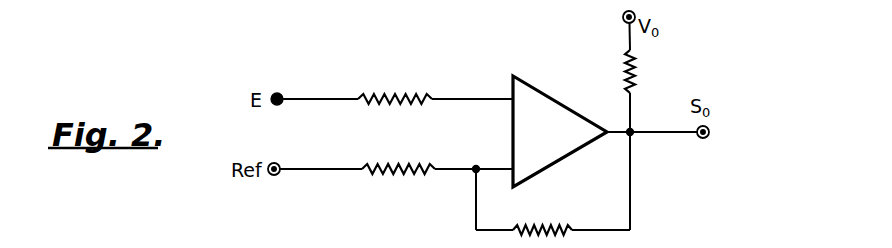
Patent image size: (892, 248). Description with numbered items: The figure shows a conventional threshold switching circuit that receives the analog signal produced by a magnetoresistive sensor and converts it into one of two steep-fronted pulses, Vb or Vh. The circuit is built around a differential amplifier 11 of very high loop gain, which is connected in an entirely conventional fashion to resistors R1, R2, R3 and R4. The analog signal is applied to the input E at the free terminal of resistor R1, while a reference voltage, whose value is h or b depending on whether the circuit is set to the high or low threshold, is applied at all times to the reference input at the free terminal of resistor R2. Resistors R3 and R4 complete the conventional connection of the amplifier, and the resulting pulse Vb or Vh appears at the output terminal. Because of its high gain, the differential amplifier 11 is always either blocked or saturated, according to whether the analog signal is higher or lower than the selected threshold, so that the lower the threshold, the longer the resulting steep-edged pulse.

The differential amplifier 11 is at (548, 146).
The resistor R1 is at (395, 85).
The resistor R2 is at (398, 156).
The resistor R3 is at (542, 213).
The resistor R4 is at (643, 71).